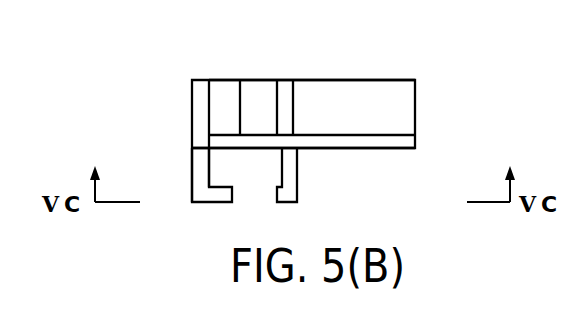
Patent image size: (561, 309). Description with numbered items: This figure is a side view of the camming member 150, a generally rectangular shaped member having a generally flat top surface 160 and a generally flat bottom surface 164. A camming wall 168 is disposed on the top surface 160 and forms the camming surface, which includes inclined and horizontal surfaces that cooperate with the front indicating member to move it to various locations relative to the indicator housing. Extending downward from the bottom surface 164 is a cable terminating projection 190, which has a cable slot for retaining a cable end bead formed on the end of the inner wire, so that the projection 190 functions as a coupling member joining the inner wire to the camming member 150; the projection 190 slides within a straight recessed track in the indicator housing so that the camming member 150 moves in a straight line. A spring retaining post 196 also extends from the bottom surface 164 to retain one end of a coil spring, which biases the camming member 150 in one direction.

The camming member 150 is at (189, 71).
The camming wall 168 is at (386, 68).
The top surface 160 is at (361, 135).
The bottom surface 164 is at (332, 149).
The cable terminating projection 190 is at (205, 194).
The spring retaining post 196 is at (291, 196).